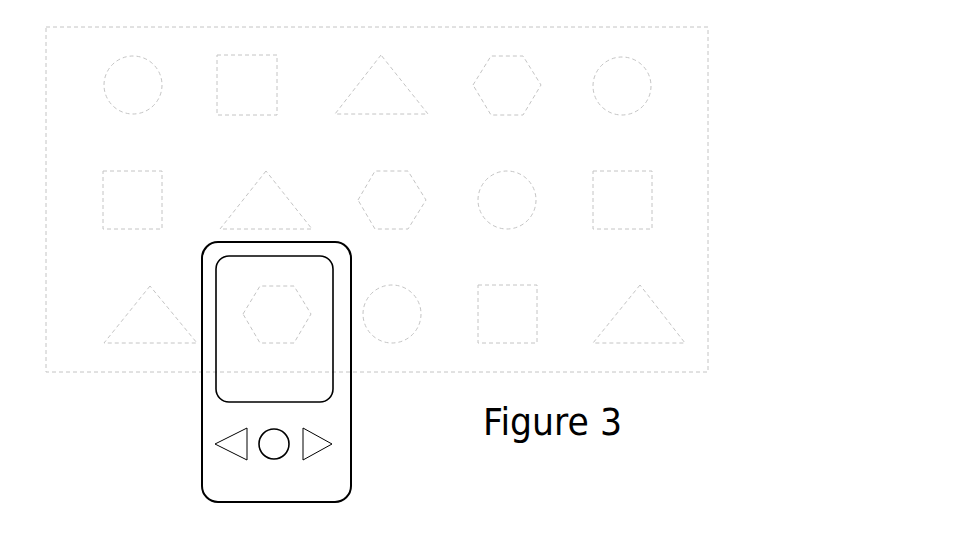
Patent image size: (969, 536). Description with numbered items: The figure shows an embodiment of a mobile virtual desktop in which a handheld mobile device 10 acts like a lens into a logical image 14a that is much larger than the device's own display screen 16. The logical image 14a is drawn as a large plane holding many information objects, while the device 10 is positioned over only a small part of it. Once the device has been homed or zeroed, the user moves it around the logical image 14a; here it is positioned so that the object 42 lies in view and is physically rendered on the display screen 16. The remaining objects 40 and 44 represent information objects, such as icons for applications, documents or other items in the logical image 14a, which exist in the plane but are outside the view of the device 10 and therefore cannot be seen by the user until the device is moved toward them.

The mobile device 10 is at (202, 487).
The display screen 16 is at (216, 397).
The logical image 14a is at (708, 198).
The information object 40 is at (352, 200).
The object 42 is at (294, 343).
The information object 44 is at (375, 171).